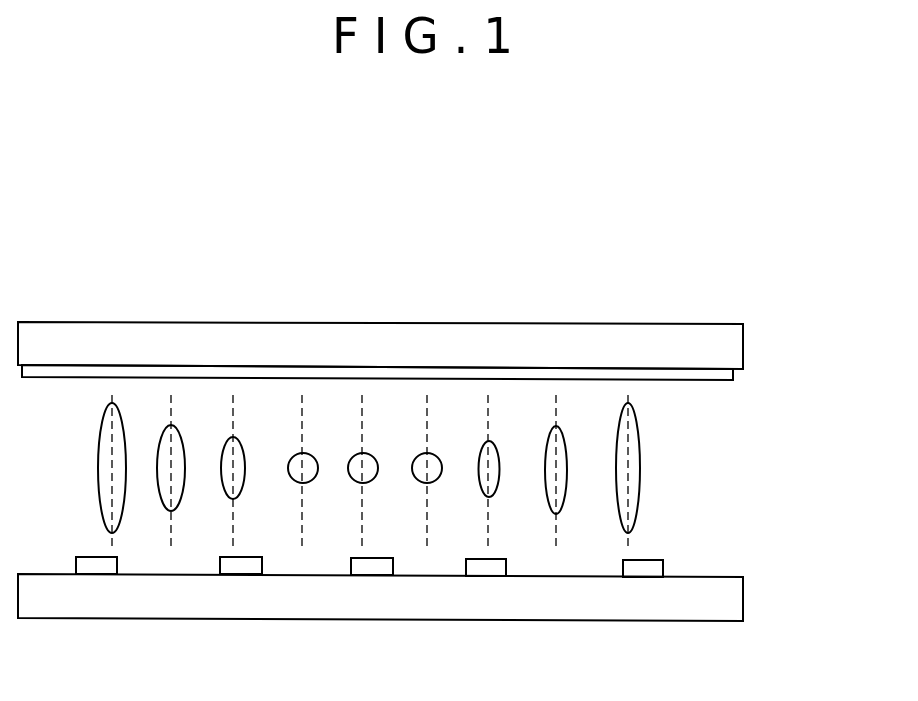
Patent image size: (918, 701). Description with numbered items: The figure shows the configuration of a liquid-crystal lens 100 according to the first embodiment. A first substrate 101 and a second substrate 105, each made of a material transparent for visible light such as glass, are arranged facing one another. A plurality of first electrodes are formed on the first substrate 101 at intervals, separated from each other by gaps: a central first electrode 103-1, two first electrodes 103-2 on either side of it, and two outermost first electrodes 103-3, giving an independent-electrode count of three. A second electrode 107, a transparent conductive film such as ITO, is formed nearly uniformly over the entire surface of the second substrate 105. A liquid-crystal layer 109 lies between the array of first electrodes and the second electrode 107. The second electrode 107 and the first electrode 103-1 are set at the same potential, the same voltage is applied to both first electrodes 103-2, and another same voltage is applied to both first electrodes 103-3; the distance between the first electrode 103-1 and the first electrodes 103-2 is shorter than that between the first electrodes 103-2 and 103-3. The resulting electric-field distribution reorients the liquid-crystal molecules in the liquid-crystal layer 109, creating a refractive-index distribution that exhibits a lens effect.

The liquid-crystal lens 100 is at (461, 263).
The first substrate 101 is at (743, 597).
The first electrode 103-1 is at (372, 569).
The first electrodes 103-2 is at (240, 568).
The first electrodes 103-3 is at (95, 568).
The second substrate 105 is at (743, 333).
The second electrode 107 is at (733, 377).
The liquid-crystal layer 109 is at (718, 470).